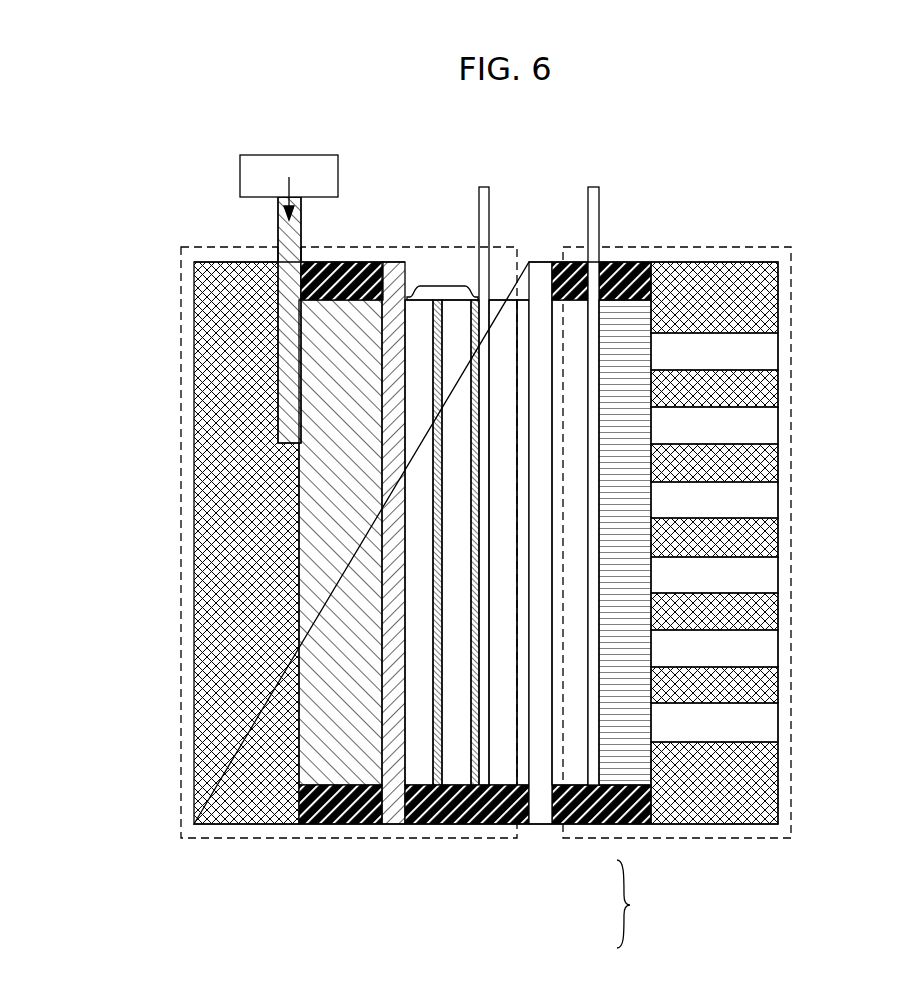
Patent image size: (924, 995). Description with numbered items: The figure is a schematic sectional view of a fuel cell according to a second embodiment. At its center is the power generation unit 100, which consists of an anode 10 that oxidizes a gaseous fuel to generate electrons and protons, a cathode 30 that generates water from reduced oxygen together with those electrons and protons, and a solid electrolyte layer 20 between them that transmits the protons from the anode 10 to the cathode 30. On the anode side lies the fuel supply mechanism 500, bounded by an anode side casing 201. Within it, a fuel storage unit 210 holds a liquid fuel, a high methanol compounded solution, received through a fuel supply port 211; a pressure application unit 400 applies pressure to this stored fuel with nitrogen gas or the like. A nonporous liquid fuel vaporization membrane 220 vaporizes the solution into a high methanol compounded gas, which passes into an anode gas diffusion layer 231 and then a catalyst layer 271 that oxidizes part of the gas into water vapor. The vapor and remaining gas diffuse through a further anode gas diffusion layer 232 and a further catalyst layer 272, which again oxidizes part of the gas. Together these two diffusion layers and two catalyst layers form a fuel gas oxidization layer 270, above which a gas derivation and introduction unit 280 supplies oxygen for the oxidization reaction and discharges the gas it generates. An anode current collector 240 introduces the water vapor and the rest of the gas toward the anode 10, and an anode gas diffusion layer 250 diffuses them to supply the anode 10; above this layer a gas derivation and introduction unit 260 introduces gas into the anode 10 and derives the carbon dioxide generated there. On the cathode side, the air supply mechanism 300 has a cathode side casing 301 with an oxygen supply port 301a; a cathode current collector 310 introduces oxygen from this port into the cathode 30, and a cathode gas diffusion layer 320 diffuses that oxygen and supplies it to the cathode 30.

The anode 10 is at (523, 740).
The solid electrolyte layer 20 is at (540, 800).
The cathode 30 is at (555, 728).
The power generation unit 100 is at (651, 904).
The anode side casing 201 is at (212, 367).
The fuel storage unit 210 is at (338, 482).
The fuel supply port 211 is at (290, 260).
The liquid fuel vaporization membrane 220 is at (392, 551).
The anode gas diffusion layer 231 is at (418, 760).
The anode gas diffusion layer 232 is at (455, 755).
The anode current collector 240 is at (478, 186).
The anode gas diffusion layer 250 is at (498, 723).
The gas derivation and introduction unit 260 is at (505, 291).
The fuel gas oxidization layer 270 is at (443, 284).
The catalyst layer 271 is at (435, 652).
The catalyst layer 272 is at (472, 708).
The gas derivation and introduction unit 280 is at (420, 278).
The air supply mechanism 300 is at (792, 753).
The cathode side casing 301 is at (764, 464).
The oxygen supply port 301a is at (764, 351).
The cathode current collector 310 is at (599, 210).
The cathode gas diffusion layer 320 is at (570, 597).
The pressure application unit 400 is at (255, 153).
The fuel supply mechanism 500 is at (181, 757).